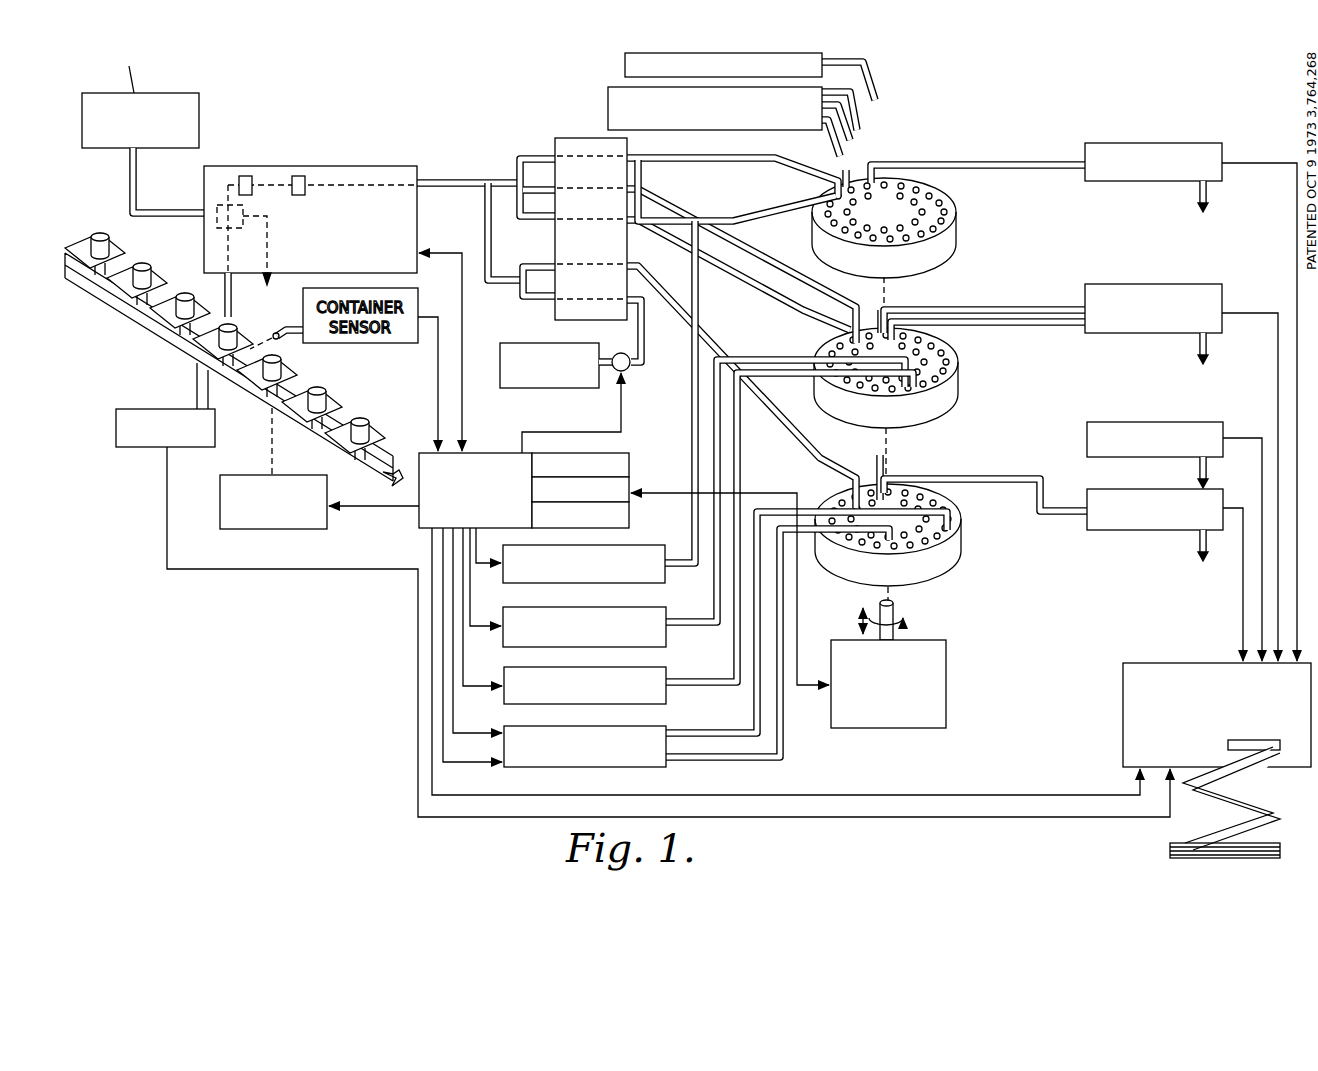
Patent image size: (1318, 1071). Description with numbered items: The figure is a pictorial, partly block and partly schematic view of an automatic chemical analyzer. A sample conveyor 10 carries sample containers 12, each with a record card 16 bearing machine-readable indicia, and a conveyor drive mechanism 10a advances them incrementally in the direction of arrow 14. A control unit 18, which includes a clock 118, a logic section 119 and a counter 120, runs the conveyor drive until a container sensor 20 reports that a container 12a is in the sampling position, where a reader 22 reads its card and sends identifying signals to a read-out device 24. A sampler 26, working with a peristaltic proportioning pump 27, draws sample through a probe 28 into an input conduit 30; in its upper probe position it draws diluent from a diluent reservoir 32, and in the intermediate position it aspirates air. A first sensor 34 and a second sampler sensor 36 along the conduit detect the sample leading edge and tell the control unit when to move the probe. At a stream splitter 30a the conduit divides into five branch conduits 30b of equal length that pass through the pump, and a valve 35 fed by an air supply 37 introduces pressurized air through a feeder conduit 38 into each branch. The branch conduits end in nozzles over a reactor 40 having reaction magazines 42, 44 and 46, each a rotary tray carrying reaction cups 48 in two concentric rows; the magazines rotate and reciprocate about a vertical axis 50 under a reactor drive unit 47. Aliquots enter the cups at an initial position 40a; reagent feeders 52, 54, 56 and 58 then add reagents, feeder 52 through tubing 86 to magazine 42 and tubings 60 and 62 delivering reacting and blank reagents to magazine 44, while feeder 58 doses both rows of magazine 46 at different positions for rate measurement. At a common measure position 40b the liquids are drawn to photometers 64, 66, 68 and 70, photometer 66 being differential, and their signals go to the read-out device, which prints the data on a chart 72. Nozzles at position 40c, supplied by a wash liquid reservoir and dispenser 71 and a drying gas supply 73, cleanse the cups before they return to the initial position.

The sample conveyor 10 is at (389, 456).
The conveyor drive mechanism 10a is at (258, 530).
The sample containers 12 is at (84, 285).
The sample container in sampling position 12a is at (238, 328).
The arrow 14 is at (371, 492).
The record card 16 is at (163, 277).
The control unit 18 is at (487, 453).
The container sensor 20 is at (409, 369).
The reader 22 is at (116, 427).
The read-out device 24 is at (1123, 731).
The sampler 26 is at (381, 166).
The proportioning pump 27 is at (561, 140).
The probe 28 is at (225, 300).
The input conduit 30 is at (324, 178).
The stream splitter 30a is at (509, 178).
The branch conduits 30b is at (668, 179).
The diluent reservoir 32 is at (83, 111).
The first sensor 34 is at (245, 176).
The valve 35 is at (631, 369).
The second sampler sensor 36 is at (298, 176).
The air supply 37 is at (535, 388).
The feeder conduit 38 is at (641, 252).
The reactor 40 is at (914, 138).
The initial position 40a is at (826, 183).
The measure position 40b is at (888, 160).
The wash and drying nozzle 40c is at (856, 172).
The reaction magazine 42 is at (957, 235).
The reaction magazine 44 is at (959, 382).
The reaction magazine 46 is at (946, 563).
The reactor drive unit 47 is at (878, 728).
The reaction cups 48 is at (851, 209).
The vertical axis 50 is at (887, 293).
The reagent feeder 52 is at (641, 545).
The reagent feeder 54 is at (655, 608).
The reagent feeder 56 is at (658, 668).
The reagent feeder 58 is at (658, 727).
The tubing 60 is at (769, 358).
The tubing 62 is at (806, 609).
The photometer 64 is at (1222, 148).
The differential photometer 66 is at (1222, 297).
The photometer 68 is at (1218, 422).
The photometer 70 is at (1222, 498).
The wash liquid reservoir and dispenser 71 is at (608, 92).
The chart 72 is at (1238, 803).
The drying gas supply 73 is at (625, 65).
The tubing 86 is at (757, 214).
The clock 118 is at (626, 453).
The logic section 119 is at (631, 482).
The counter 120 is at (631, 516).